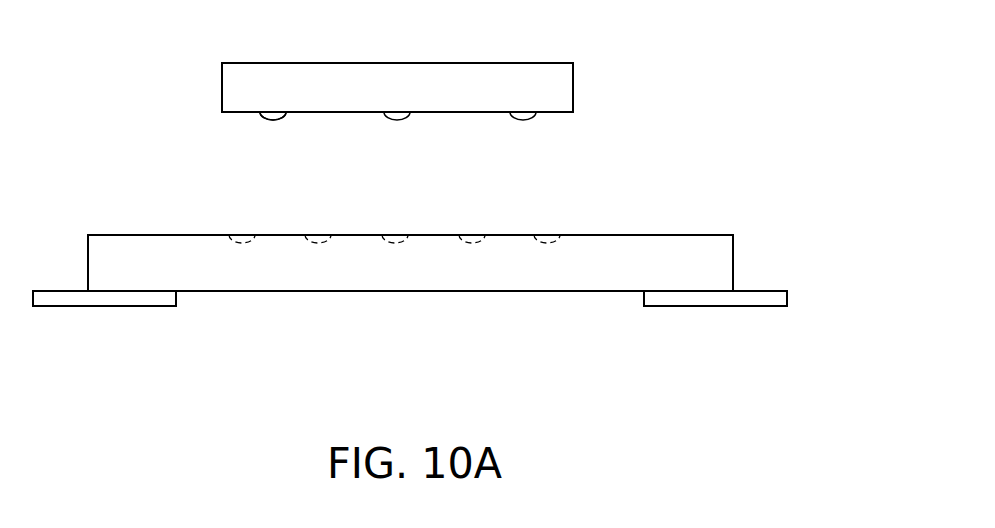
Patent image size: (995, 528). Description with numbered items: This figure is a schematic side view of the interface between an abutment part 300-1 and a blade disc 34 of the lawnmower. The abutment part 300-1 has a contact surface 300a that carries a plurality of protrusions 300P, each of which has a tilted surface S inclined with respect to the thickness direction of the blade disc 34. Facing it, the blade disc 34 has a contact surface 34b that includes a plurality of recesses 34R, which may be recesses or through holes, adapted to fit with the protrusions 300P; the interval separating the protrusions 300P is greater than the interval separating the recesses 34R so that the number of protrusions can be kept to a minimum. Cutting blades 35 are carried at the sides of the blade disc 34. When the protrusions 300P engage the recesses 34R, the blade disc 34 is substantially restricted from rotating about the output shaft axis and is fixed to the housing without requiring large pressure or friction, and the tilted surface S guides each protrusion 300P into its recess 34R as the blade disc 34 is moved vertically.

The abutment part 300-1 is at (498, 73).
The protrusion 300P is at (522, 118).
The contact surface of the abutment part 300a is at (313, 113).
The tilted surface S is at (265, 117).
The blade disc 34 is at (510, 280).
The contact surface of the blade disc 34b is at (508, 235).
The recess 34R is at (242, 243).
The cutting blade 35 is at (107, 298).